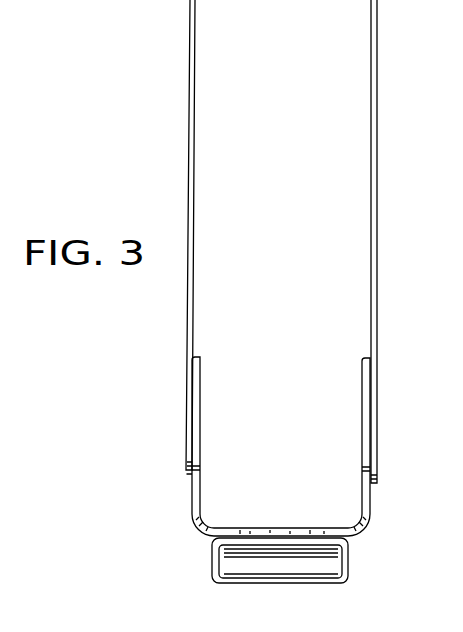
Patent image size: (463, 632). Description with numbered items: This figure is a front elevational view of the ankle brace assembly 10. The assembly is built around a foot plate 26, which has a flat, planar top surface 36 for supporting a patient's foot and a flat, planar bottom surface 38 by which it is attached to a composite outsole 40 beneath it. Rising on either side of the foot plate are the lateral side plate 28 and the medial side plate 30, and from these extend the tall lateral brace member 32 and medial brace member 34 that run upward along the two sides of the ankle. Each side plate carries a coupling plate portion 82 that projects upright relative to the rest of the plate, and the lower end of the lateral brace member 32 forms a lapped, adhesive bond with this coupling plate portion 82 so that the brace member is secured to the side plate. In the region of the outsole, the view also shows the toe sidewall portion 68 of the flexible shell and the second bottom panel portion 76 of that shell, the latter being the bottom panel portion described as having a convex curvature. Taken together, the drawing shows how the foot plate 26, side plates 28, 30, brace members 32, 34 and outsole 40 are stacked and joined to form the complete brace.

The ankle brace assembly 10 is at (155, 104).
The foot plate 26 is at (262, 535).
The lateral side plate 28 is at (187, 502).
The medial side plate 30 is at (369, 503).
The lateral brace member 32 is at (188, 143).
The medial brace member 34 is at (379, 91).
The top surface 36 is at (280, 528).
The bottom planar surface 38 is at (316, 544).
The composite outsole 40 is at (230, 562).
The toe sidewall portion 68 is at (327, 555).
The second bottom panel portion 76 is at (270, 576).
The coupling plate portion 82 is at (200, 418).